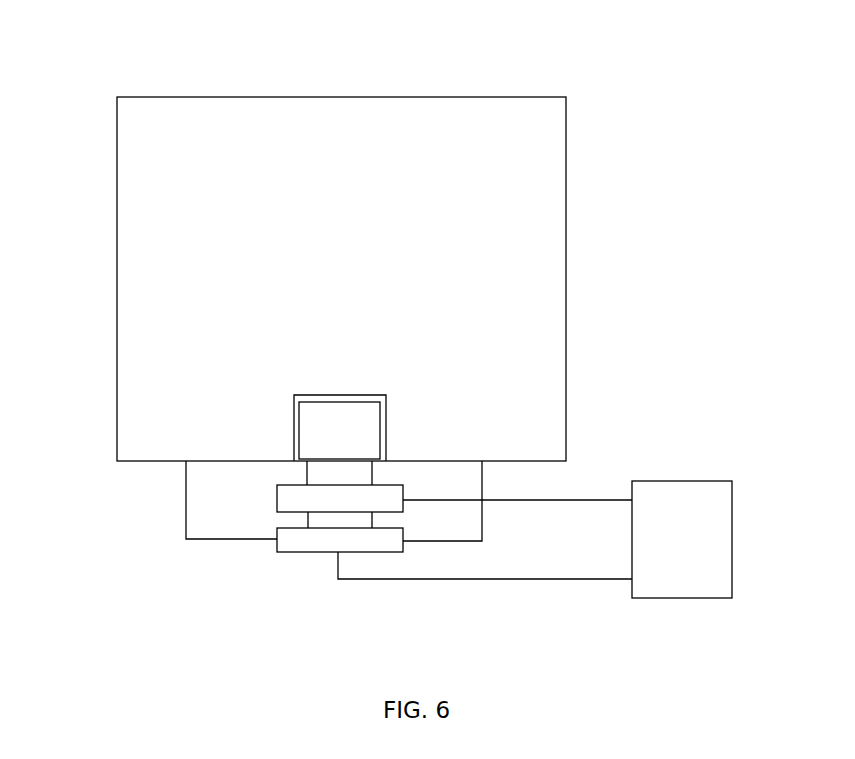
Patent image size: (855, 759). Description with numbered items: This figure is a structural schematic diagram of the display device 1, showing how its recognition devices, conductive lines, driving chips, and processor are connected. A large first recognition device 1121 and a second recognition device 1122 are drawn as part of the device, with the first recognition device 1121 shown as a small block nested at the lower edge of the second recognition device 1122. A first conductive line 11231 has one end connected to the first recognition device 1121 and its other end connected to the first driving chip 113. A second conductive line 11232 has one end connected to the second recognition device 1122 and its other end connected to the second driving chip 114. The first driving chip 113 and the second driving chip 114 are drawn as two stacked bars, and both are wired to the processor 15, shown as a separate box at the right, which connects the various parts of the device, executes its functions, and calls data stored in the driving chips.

The display device 1 is at (97, 82).
The second recognition device 1122 is at (536, 358).
The first recognition device 1121 is at (317, 428).
The first conductive line 11231 is at (307, 476).
The second conductive line 11232 is at (186, 515).
The first driving chip 113 is at (293, 497).
The second driving chip 114 is at (318, 543).
The processor 15 is at (683, 537).